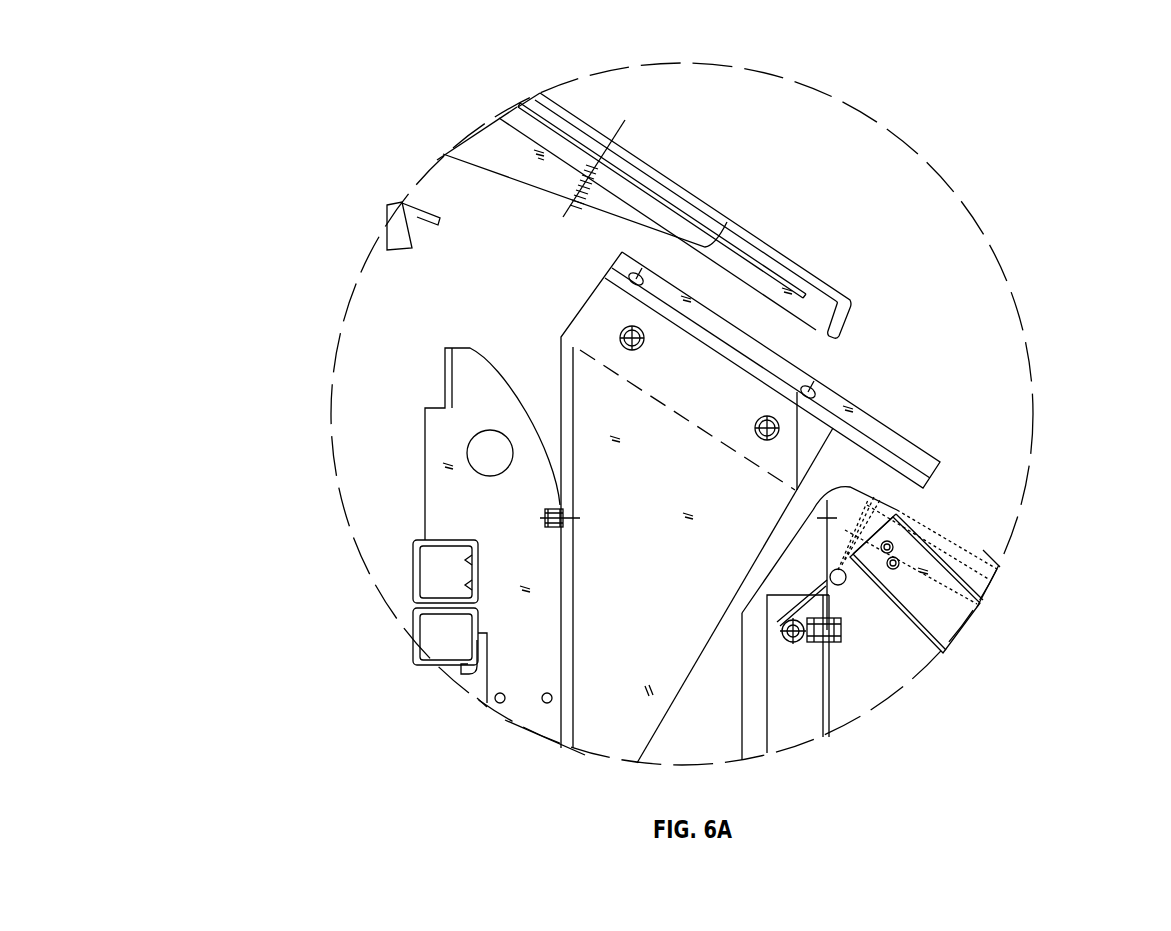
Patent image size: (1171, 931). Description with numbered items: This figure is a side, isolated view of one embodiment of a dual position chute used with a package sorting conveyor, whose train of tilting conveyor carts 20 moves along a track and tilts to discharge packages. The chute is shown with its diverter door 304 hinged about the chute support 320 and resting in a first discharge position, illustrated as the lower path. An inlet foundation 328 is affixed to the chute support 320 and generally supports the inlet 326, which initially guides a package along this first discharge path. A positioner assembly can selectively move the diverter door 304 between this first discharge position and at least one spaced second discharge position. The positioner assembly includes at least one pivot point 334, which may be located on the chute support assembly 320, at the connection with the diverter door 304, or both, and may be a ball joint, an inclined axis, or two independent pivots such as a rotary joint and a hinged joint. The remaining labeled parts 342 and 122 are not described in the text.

The conveyor cart 20 is at (587, 127).
The inlet 326 is at (862, 428).
The inlet foundation 328 is at (620, 590).
The chute support 320 is at (425, 542).
The diverter door 304 is at (990, 563).
The strut 342 is at (963, 608).
The pivot 122 is at (840, 580).
The pivot point 334 is at (833, 630).